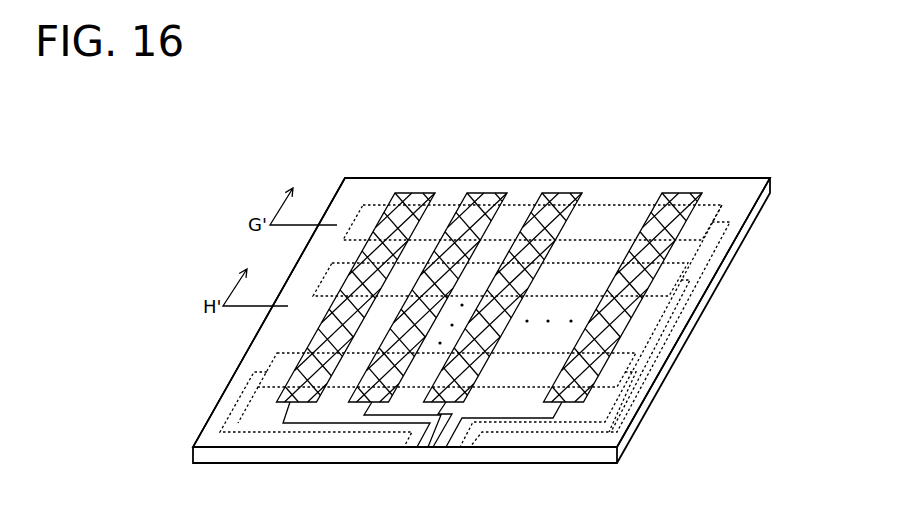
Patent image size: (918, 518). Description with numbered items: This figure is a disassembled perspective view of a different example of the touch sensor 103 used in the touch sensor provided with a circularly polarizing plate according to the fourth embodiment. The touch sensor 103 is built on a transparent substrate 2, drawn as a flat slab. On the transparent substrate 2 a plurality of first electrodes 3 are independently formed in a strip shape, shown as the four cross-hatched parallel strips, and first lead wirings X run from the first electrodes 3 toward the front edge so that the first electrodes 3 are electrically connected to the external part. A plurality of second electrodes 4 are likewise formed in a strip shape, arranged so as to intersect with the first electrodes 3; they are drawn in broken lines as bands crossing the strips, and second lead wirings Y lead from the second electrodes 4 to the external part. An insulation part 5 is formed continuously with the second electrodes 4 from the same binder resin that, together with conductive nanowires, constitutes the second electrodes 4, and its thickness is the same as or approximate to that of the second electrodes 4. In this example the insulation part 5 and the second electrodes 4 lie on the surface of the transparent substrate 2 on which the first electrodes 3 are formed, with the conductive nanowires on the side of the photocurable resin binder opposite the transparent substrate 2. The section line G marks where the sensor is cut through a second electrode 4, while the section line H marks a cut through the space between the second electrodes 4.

The touch sensor 103 is at (336, 140).
The transparent substrate 2 is at (742, 190).
The first electrodes 3 is at (678, 205).
The second electrodes 4 is at (613, 220).
The insulation part 5 is at (588, 250).
The first lead wirings X is at (285, 414).
The second lead wirings Y is at (566, 432).
The G-G' line G is at (733, 222).
The H-H' line H is at (682, 303).